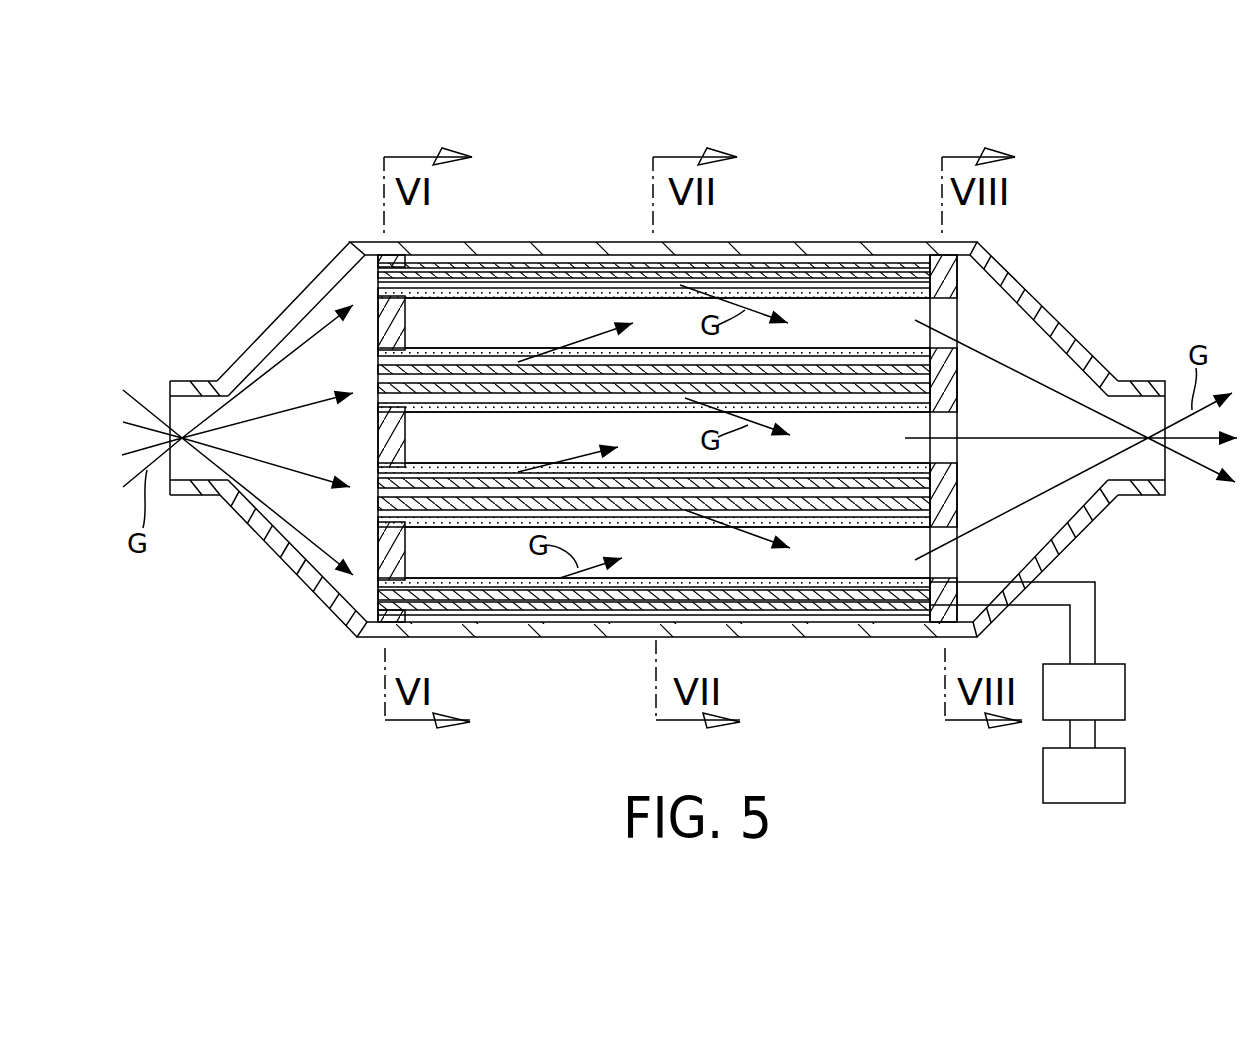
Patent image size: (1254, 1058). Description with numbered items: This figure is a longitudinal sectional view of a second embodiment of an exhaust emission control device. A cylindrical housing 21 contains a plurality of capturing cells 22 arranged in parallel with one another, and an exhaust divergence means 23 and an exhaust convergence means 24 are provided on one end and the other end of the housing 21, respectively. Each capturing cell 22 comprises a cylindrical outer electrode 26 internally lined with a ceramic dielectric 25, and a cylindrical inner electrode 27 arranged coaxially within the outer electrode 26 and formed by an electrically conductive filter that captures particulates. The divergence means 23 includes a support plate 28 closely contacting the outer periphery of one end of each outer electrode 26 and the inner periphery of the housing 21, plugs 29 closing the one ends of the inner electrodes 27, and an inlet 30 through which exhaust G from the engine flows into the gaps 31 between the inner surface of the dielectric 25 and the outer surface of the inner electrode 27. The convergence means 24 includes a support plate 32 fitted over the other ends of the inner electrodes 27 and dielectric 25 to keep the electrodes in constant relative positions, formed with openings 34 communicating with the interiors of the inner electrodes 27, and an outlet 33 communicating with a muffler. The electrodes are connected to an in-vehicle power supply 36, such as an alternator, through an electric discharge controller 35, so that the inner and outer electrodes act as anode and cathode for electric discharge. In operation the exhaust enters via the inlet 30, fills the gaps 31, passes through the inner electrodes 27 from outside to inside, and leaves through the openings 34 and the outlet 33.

The cylindrical housing 21 is at (898, 248).
The capturing cell 22 is at (573, 250).
The exhaust divergence means 23 is at (270, 553).
The exhaust convergence means 24 is at (1082, 325).
The dielectric 25 is at (618, 272).
The outer electrode 26 is at (779, 266).
The inner electrode 27 is at (847, 292).
The support plate 28 is at (358, 622).
The plug 29 is at (392, 332).
The inlet 30 is at (193, 495).
The gap 31 is at (527, 288).
The support plate 32 is at (945, 280).
The outlet 33 is at (1150, 385).
The opening 34 is at (945, 320).
The electric discharge controller 35 is at (1105, 688).
The in-vehicle power supply 36 is at (1105, 777).